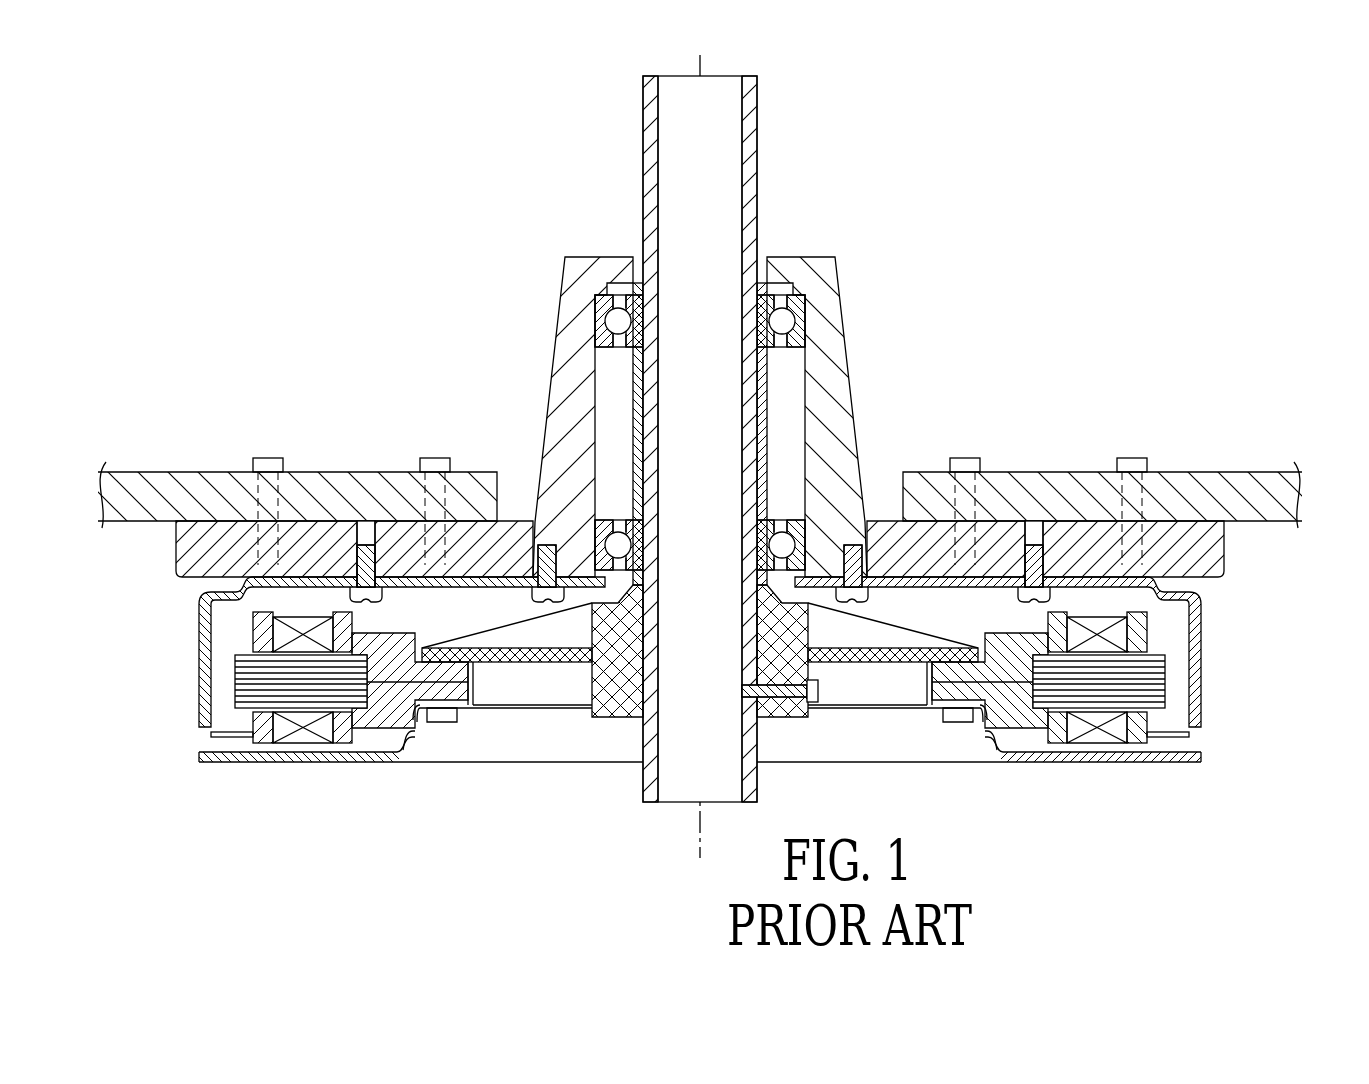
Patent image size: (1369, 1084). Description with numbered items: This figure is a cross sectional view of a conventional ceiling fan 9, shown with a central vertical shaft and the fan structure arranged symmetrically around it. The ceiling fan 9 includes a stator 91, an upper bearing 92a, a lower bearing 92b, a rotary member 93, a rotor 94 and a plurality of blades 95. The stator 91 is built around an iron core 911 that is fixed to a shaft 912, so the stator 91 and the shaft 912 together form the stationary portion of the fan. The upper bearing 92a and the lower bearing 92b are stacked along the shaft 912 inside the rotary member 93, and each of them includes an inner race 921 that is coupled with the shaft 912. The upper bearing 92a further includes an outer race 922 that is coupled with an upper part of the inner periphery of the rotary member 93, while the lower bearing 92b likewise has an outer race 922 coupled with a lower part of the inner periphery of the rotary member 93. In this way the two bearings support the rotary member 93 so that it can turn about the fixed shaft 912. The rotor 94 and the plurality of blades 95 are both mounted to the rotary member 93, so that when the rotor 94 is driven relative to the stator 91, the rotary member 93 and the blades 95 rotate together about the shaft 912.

The ceiling fan 9 is at (300, 165).
The stator 91 is at (620, 800).
The iron core 911 is at (1152, 700).
The shaft 912 is at (757, 187).
The upper bearing 92a is at (939, 185).
The lower bearing 92b is at (403, 352).
The inner race 921 is at (765, 303).
The outer race 922 is at (800, 302).
The rotary member 93 is at (535, 252).
The rotor 94 is at (178, 675).
The blades 95 is at (1267, 480).